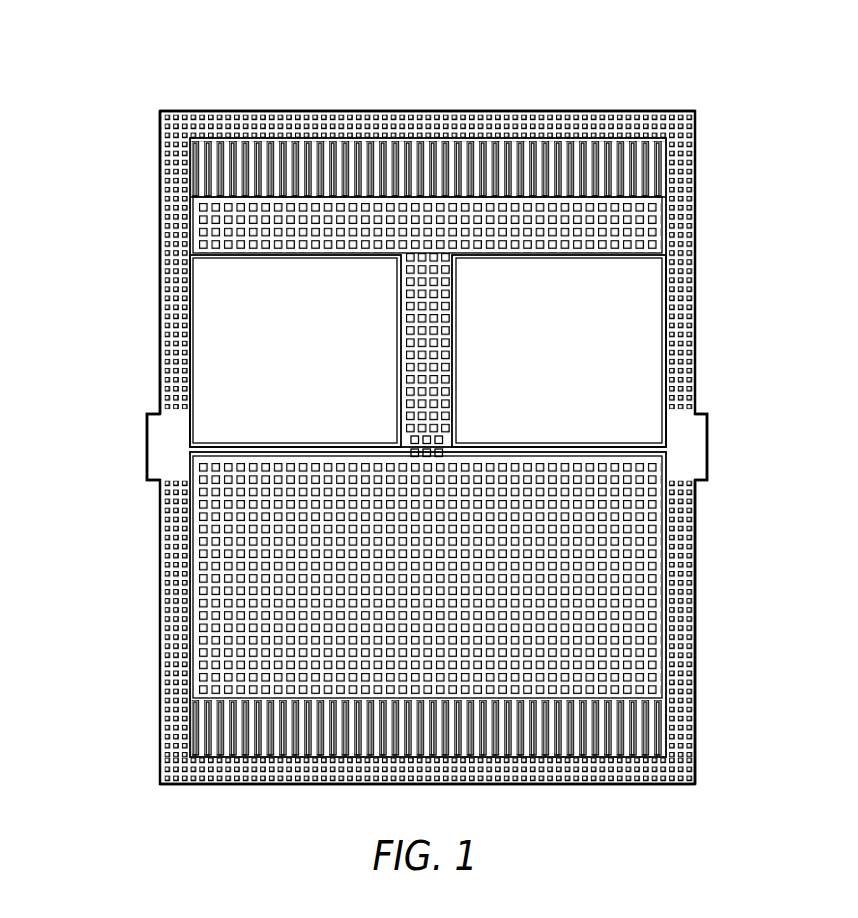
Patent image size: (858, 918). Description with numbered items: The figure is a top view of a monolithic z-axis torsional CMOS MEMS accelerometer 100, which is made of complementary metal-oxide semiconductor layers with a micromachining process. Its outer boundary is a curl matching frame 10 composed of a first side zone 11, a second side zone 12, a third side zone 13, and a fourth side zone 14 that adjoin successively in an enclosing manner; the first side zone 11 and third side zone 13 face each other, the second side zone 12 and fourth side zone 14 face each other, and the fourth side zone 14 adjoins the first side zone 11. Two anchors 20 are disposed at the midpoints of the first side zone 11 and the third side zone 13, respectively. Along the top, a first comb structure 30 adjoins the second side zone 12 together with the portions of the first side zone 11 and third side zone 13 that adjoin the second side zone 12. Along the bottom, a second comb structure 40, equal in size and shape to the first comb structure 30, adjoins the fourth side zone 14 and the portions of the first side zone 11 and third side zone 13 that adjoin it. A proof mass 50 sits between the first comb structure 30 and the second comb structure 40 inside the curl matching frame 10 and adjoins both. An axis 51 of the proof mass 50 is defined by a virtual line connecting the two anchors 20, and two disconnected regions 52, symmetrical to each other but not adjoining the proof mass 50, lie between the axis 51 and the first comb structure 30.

The monolithic z-axis torsional CMOS MEMS accelerometer 100 is at (846, 66).
The curl matching frame 10 is at (668, 111).
The first side zone 11 is at (170, 293).
The second side zone 12 is at (335, 125).
The third side zone 13 is at (683, 610).
The fourth side zone 14 is at (573, 777).
The anchors 20 is at (165, 452).
The first comb structure 30 is at (205, 180).
The second comb structure 40 is at (208, 712).
The proof mass 50 is at (205, 573).
The axis 51 is at (455, 445).
The disconnected regions 52 is at (373, 275).